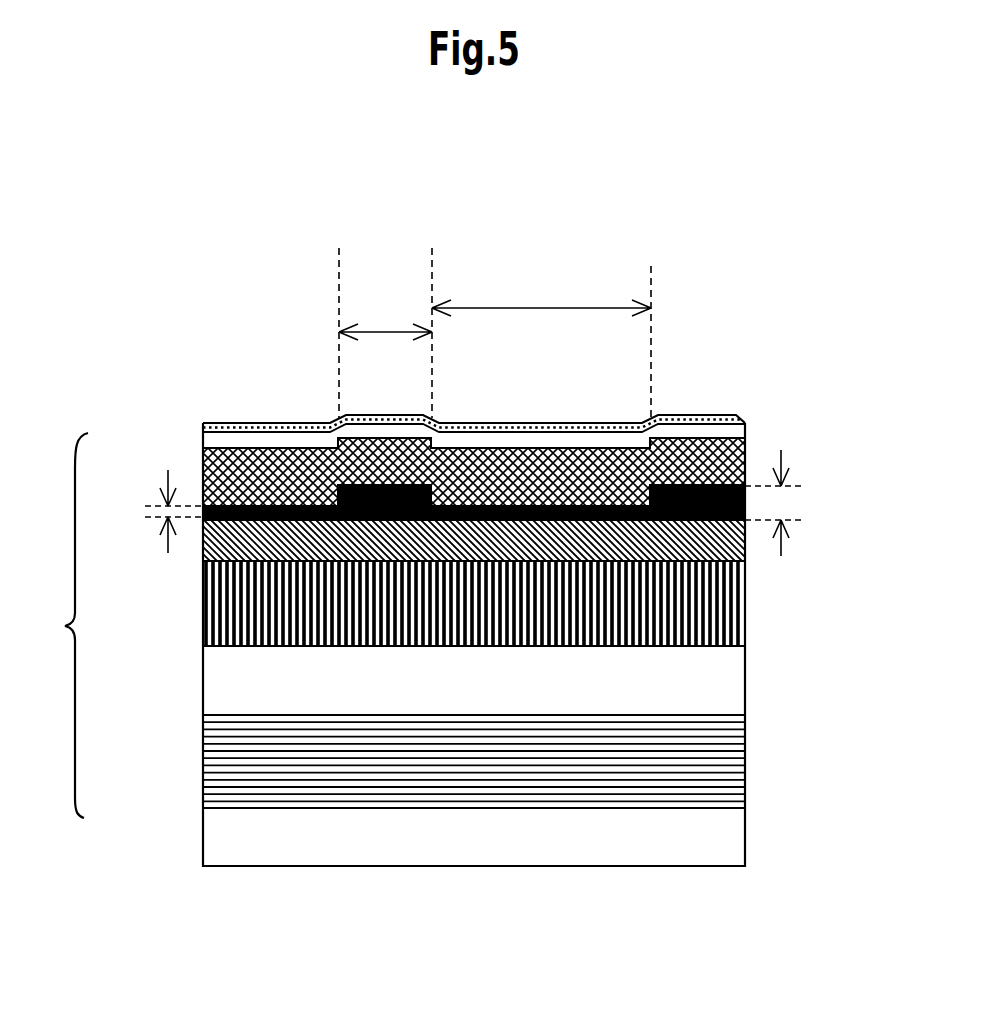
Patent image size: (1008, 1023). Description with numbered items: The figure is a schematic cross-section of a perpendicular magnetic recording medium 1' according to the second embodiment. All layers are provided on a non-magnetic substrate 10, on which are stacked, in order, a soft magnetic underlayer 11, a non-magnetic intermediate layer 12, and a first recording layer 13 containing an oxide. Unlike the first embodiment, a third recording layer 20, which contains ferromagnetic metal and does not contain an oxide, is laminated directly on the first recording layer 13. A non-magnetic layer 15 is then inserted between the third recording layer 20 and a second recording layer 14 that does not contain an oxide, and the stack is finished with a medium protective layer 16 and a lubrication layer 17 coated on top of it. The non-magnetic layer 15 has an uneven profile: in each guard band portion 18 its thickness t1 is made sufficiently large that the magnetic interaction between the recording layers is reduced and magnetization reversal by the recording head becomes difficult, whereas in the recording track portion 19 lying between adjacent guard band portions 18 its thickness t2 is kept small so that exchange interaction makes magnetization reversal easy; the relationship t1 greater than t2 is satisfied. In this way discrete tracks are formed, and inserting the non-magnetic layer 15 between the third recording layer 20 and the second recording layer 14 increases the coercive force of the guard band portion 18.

The perpendicular magnetic recording medium 1' is at (58, 625).
The non-magnetic substrate 10 is at (705, 835).
The soft magnetic underlayer 11 is at (708, 755).
The non-magnetic intermediate layer 12 is at (707, 688).
The first recording layer 13 is at (735, 587).
The second recording layer 14 is at (737, 435).
The non-magnetic layer 15 is at (466, 445).
The medium protective layer 16 is at (727, 410).
The lubrication layer 17 is at (681, 413).
The guard band portion 18 is at (367, 324).
The recording track portion 19 is at (518, 298).
The third recording layer 20 is at (737, 533).
The thickness of the non-magnetic layer in the guard band portion t1 is at (802, 503).
The thickness of the non-magnetic layer in the recording track portion t2 is at (153, 511).